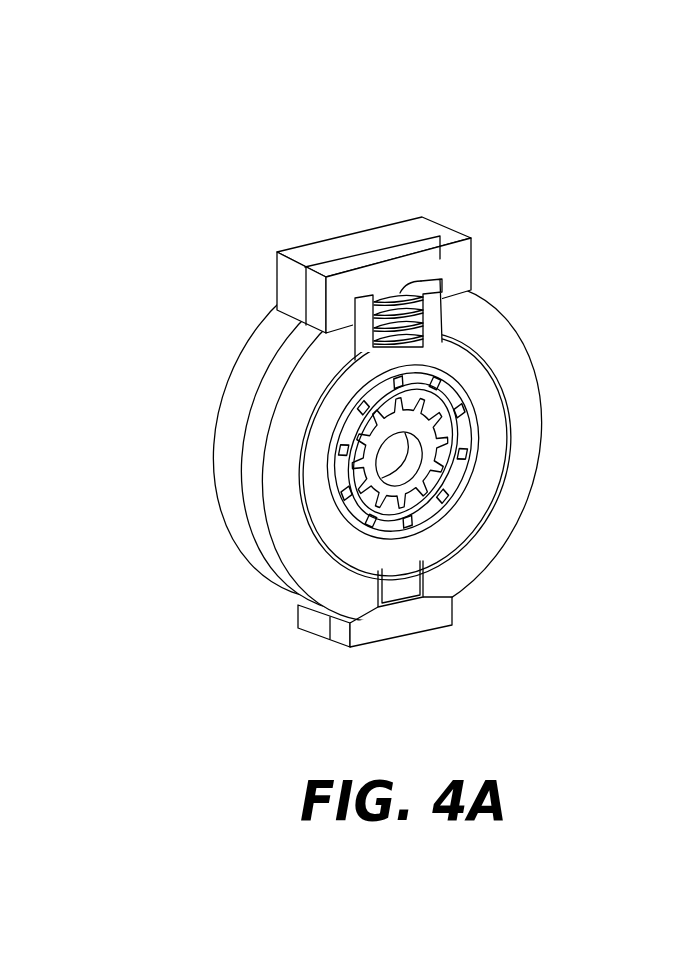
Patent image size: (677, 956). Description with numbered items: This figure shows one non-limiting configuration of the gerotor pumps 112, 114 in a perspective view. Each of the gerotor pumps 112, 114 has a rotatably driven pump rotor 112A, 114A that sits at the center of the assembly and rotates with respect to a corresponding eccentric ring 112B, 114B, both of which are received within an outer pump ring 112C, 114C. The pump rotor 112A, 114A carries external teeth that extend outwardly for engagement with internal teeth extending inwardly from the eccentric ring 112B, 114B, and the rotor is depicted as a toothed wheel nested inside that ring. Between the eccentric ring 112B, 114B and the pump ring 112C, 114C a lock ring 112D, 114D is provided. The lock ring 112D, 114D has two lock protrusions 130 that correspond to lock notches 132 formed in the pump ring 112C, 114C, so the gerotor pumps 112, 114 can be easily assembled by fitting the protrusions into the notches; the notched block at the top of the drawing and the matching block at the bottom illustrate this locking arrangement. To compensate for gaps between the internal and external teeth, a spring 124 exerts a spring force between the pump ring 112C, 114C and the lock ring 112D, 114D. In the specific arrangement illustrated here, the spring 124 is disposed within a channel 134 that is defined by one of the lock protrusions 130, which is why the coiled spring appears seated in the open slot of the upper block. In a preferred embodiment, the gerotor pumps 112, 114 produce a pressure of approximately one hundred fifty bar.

The gerotor pump 112 is at (390, 376).
The gerotor pump 114 is at (390, 376).
The pump rotor 112A is at (375, 598).
The pump rotor 114A is at (380, 493).
The eccentric ring 112B is at (441, 456).
The eccentric ring 114B is at (492, 407).
The pump ring 112C is at (420, 452).
The pump ring 114C is at (480, 540).
The lock ring 112D is at (361, 435).
The lock ring 114D is at (330, 408).
The spring 124 is at (433, 321).
The lock protrusion 130 is at (423, 395).
The lock notch 132 is at (441, 282).
The channel 134 is at (410, 293).